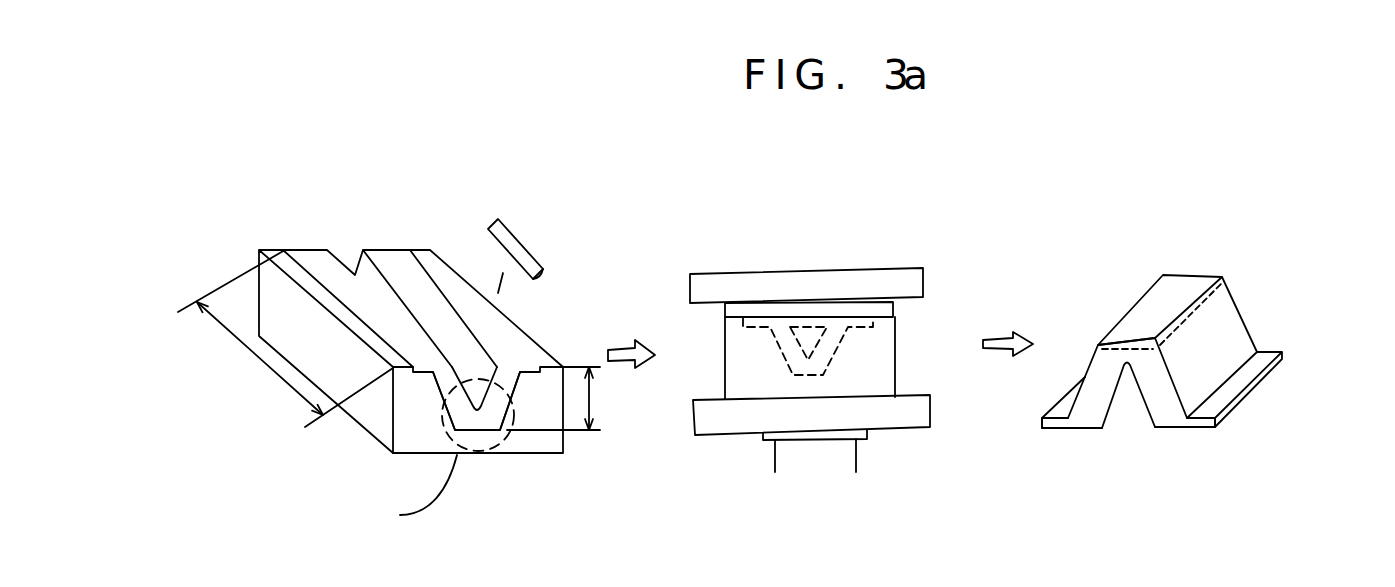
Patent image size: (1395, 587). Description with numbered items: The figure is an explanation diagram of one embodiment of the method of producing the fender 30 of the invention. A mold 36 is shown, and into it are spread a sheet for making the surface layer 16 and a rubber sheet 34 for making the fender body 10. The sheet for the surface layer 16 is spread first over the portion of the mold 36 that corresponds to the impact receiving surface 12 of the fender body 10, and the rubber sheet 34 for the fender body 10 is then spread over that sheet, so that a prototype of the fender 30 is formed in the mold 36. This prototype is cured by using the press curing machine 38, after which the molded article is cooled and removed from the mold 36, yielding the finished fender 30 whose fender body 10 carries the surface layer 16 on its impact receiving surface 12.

The fender body 10 is at (1168, 408).
The impact receiving surface 12 is at (486, 428).
The surface layer 16 is at (1138, 320).
The fender 30 is at (1200, 348).
The rubber sheet for making fender body 34 is at (484, 229).
The mold 36 is at (400, 402).
The press curing machine 38 is at (893, 440).